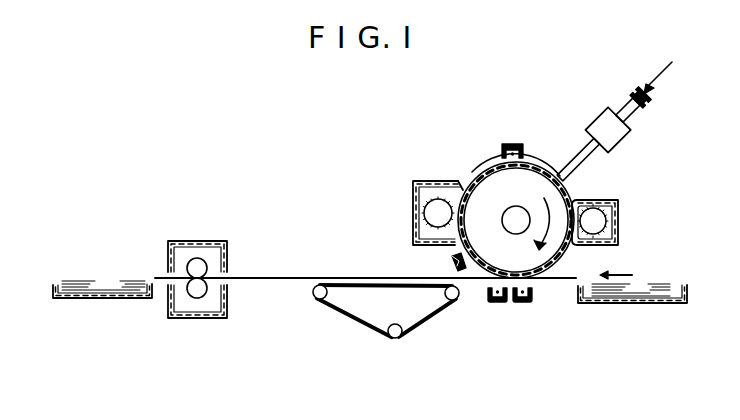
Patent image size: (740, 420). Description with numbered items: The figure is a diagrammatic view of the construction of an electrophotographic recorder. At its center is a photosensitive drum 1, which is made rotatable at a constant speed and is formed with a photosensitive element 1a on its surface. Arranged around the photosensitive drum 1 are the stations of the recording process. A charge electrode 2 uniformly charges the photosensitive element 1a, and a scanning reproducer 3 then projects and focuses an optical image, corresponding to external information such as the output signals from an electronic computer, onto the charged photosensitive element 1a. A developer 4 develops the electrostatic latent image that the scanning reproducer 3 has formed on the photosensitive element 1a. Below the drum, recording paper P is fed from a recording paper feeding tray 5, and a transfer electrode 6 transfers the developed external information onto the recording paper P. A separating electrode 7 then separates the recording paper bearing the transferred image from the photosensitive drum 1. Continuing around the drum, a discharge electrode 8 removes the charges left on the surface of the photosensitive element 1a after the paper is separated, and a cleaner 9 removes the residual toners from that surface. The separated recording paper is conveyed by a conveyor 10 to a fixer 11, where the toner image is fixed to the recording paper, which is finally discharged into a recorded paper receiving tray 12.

The photosensitive drum 1 is at (538, 178).
The photosensitive element 1a is at (480, 168).
The charge electrode 2 is at (512, 142).
The scanning reproducer 3 is at (597, 122).
The developer 4 is at (620, 222).
The recording paper feeding tray 5 is at (627, 305).
The transfer electrode 6 is at (523, 305).
The separating electrode 7 is at (494, 305).
The discharge electrode 8 is at (450, 264).
The cleaner 9 is at (412, 211).
The conveyor 10 is at (362, 325).
The fixer 11 is at (228, 247).
The recorded paper receiving tray 12 is at (100, 300).
The recording paper P is at (649, 290).